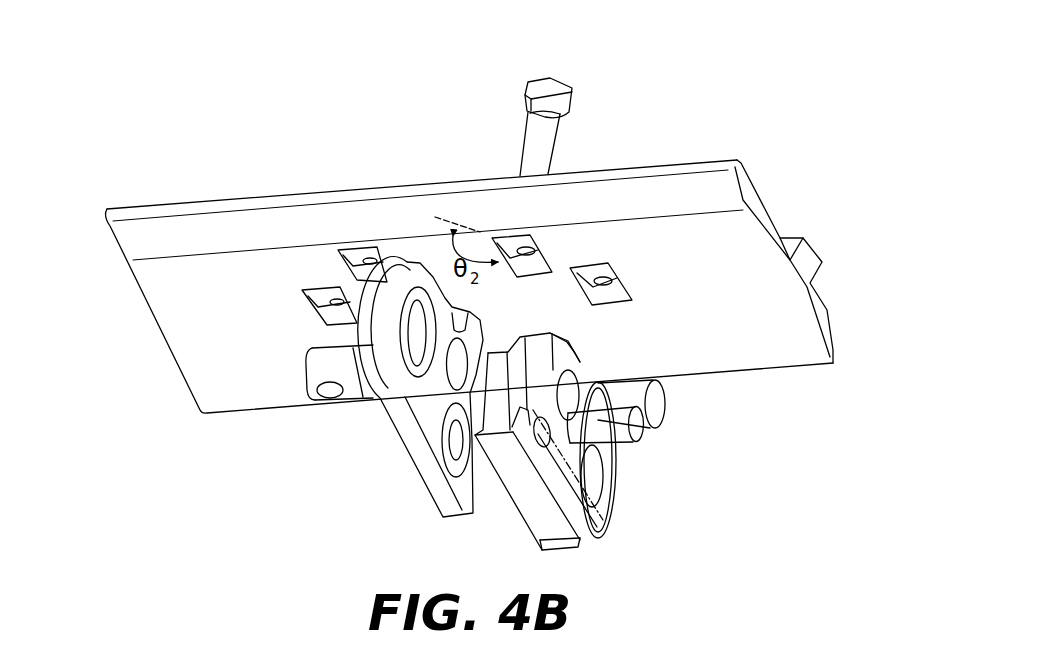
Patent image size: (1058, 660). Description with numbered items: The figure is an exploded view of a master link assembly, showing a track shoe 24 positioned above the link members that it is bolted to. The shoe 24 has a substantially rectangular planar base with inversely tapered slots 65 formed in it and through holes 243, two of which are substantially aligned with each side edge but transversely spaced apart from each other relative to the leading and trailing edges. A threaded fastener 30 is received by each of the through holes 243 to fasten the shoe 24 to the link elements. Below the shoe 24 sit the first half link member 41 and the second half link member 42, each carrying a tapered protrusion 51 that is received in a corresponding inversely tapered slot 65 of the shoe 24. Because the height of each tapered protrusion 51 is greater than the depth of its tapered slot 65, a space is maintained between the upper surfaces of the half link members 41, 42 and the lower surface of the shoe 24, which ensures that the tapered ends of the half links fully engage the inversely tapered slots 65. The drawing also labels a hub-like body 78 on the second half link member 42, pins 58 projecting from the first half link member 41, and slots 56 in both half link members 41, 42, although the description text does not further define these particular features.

The shoe 24 is at (797, 188).
The threaded fastener 30 is at (558, 84).
The through holes 243 is at (347, 262).
The inversely tapered slots 65 is at (606, 303).
The hub 78 is at (405, 397).
The second half link member 42 is at (423, 413).
The first half link member 41 is at (597, 531).
The pins 58 is at (603, 488).
The tapered protrusions 51 is at (478, 320).
The slots 56 is at (540, 438).